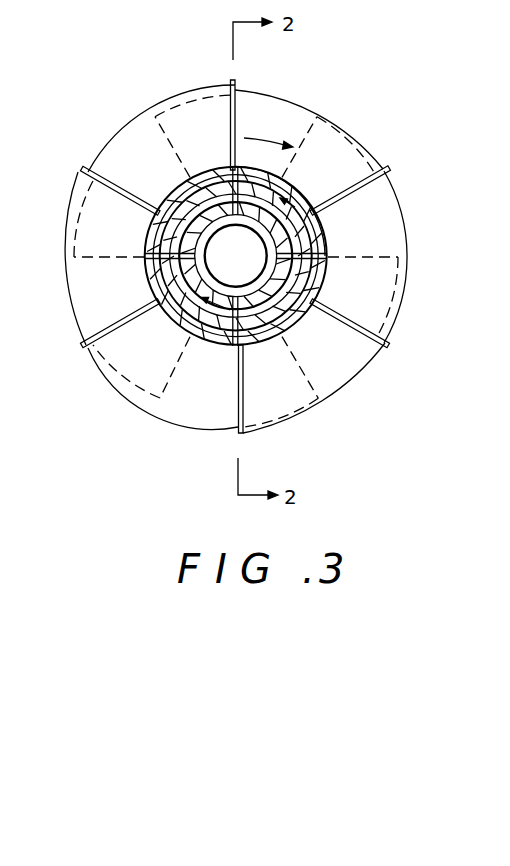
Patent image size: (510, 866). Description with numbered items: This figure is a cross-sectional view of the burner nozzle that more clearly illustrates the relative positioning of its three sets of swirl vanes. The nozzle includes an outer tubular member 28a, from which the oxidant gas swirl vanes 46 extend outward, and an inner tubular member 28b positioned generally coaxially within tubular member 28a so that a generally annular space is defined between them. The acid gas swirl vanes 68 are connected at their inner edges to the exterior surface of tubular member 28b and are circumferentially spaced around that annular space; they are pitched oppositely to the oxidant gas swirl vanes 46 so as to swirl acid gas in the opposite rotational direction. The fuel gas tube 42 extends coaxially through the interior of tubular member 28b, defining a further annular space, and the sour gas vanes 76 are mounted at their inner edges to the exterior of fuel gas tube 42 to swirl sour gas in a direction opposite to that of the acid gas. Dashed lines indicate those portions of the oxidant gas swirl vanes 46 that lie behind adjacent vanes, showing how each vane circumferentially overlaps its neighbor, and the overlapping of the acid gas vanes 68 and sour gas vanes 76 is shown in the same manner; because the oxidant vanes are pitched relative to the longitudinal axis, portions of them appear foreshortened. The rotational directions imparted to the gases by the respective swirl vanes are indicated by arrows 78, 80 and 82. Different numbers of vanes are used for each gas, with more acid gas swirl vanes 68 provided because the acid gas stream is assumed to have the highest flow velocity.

The oxidant gas swirl vanes 46 is at (311, 99).
The arrow 78 is at (271, 136).
The acid gas swirl vanes 68 is at (172, 206).
The arrow 80 is at (297, 200).
The tubular member 28a is at (324, 225).
The tubular member 28b is at (322, 278).
The fuel gas tube 42 is at (303, 313).
The sour gas vanes 76 is at (162, 269).
The arrow 82 is at (203, 346).